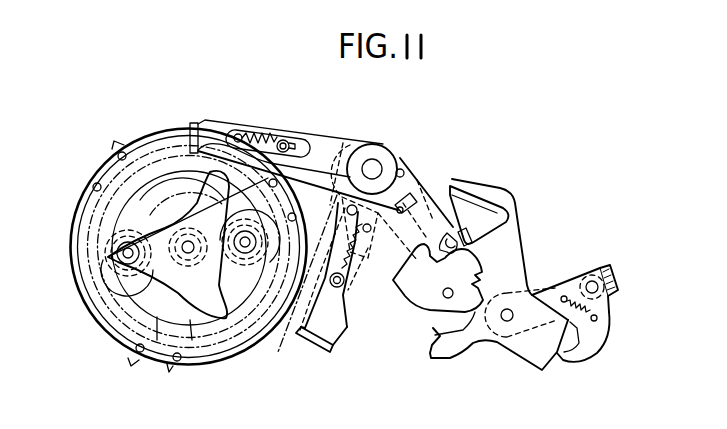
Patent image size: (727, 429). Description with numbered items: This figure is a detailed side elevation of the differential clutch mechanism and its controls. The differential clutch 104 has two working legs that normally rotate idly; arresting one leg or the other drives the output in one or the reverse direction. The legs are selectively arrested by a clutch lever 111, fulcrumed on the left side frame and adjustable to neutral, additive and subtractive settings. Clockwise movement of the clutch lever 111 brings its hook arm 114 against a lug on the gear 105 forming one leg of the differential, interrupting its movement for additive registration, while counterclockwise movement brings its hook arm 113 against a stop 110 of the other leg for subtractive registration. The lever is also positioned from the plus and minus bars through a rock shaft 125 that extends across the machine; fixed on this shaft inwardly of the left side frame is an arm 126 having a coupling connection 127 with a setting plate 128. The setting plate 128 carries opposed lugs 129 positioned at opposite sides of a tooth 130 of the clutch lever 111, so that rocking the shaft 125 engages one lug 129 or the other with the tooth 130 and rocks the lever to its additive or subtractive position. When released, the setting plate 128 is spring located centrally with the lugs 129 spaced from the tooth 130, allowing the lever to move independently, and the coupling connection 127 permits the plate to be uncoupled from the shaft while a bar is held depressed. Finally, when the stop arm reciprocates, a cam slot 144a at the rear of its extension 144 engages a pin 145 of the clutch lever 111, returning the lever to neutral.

The differential clutch 104 is at (176, 374).
The gear 105 is at (100, 291).
The stop 110 is at (160, 237).
The clutch lever 111 is at (397, 158).
The hook arm 113 is at (218, 125).
The hook arm 114 is at (336, 338).
The rock shaft 125 is at (505, 322).
The arm 126 is at (557, 284).
The coupling connection 127 is at (605, 335).
The setting plate 128 is at (512, 247).
The lugs 129 is at (478, 215).
The tooth 130 is at (448, 228).
The extension 144 is at (328, 218).
The cam slot 144a is at (307, 281).
The pin 145 is at (333, 205).